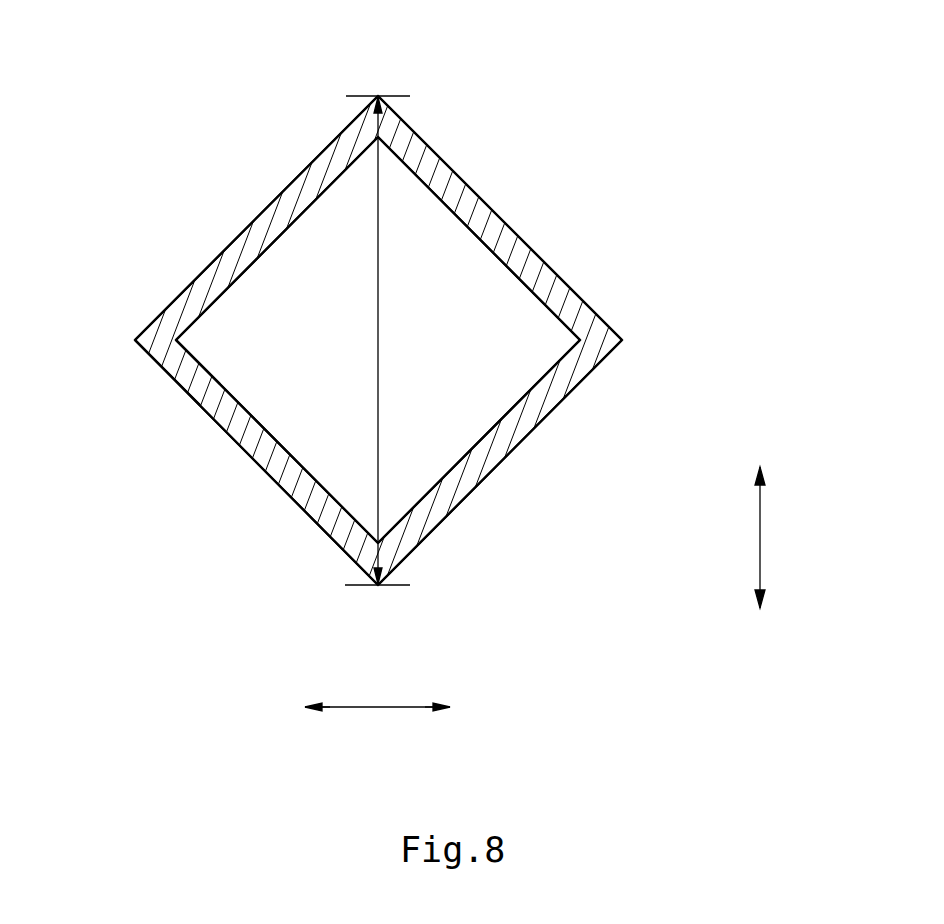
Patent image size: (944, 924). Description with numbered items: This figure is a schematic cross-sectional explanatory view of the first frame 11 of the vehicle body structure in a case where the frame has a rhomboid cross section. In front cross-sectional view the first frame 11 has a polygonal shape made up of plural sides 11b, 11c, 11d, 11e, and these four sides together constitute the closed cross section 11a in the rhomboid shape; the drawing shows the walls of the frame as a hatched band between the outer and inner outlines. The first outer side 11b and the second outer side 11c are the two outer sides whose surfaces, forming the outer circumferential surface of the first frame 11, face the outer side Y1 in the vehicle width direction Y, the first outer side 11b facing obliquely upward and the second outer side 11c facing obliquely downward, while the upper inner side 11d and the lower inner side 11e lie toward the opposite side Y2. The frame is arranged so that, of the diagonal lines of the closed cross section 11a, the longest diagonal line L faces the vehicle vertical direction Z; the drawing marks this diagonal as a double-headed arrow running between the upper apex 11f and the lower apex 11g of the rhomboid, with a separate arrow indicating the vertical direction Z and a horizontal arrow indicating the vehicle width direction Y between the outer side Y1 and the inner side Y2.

The first frame 11 is at (523, 150).
The closed cross section 11a is at (180, 372).
The first outer side 11b is at (260, 215).
The second outer side 11c is at (282, 487).
The upper inner side 11d is at (505, 225).
The lower inner side 11e is at (520, 443).
The top end 11f is at (378, 96).
The bottom end 11g is at (378, 585).
The longest diagonal line L is at (379, 312).
The vehicle vertical direction Z is at (771, 537).
The vehicle width direction Y is at (377, 723).
The outer side in the vehicle width direction Y1 is at (301, 710).
The Y2 direction Y2 is at (453, 710).